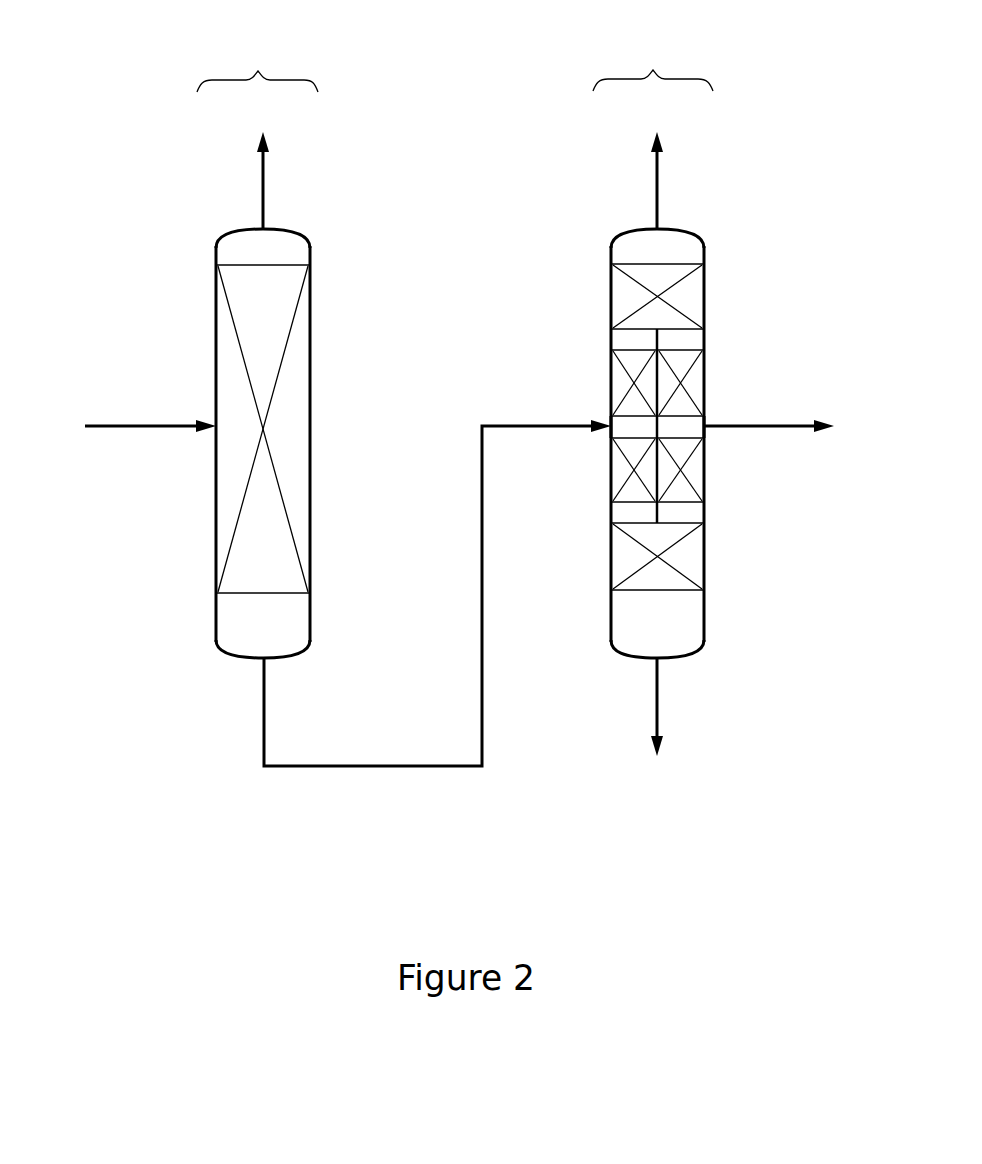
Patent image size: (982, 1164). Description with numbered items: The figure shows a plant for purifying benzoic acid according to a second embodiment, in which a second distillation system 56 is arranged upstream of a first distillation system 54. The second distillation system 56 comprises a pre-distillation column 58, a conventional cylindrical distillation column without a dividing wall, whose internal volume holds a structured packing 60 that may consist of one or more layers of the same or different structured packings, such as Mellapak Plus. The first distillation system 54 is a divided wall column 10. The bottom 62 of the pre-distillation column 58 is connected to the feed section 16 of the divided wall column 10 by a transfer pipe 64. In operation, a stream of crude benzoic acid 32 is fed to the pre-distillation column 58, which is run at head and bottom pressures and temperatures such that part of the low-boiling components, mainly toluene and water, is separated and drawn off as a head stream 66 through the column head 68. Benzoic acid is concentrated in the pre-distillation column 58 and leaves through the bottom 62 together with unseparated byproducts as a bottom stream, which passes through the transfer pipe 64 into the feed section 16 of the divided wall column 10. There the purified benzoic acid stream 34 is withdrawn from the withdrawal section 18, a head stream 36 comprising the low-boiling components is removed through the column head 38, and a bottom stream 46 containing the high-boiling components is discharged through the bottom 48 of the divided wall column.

The divided wall column 10 is at (727, 239).
The feed section 16 is at (601, 413).
The withdrawal section 18 is at (717, 410).
The stream of crude benzoic acid 32 is at (103, 429).
The purified benzoic acid stream 34 is at (794, 428).
The head stream 36 is at (658, 165).
The column head 38 is at (628, 232).
The bottom stream 46 is at (663, 710).
The bottom 48 is at (628, 653).
The first distillation system 54 is at (653, 57).
The second distillation system 56 is at (257, 57).
The pre-distillation column 58 is at (200, 243).
The structured packing 60 is at (238, 347).
The bottom 62 is at (227, 655).
The transfer pipe 64 is at (370, 768).
The head stream 66 is at (265, 167).
The column head 68 is at (310, 238).